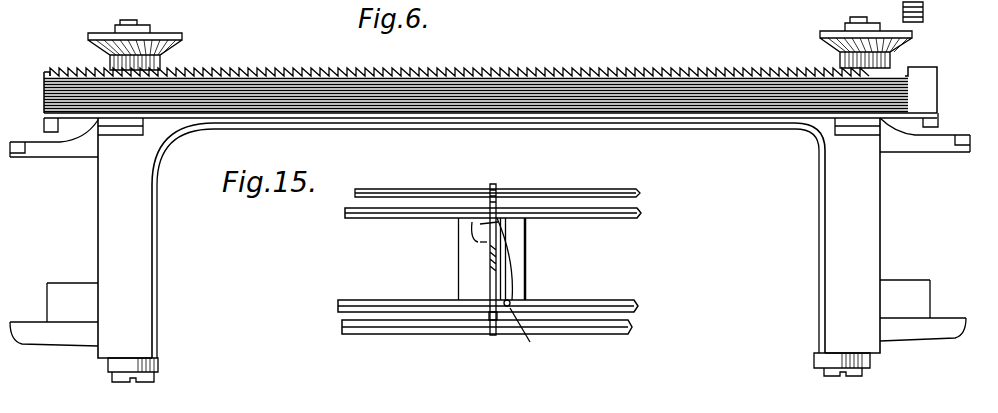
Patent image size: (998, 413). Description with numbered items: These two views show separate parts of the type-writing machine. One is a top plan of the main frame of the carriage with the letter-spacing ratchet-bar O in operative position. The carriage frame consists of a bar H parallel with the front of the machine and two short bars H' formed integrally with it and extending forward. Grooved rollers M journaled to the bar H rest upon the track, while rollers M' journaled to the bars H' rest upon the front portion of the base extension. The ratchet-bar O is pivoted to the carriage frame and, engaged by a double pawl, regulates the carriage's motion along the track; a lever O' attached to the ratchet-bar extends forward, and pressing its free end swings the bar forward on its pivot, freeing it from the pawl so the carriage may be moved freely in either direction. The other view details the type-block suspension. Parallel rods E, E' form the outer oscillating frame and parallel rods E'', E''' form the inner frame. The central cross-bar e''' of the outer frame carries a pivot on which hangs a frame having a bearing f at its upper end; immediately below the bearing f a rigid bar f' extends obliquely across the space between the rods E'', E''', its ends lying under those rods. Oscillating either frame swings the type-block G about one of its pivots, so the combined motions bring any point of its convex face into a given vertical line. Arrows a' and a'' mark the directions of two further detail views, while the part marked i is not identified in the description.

In FIG. 6, the letter-spacing ratchet-bar O is at (491, 88).
In FIG. 6, the lever O' is at (490, 138).
In FIG. 6, the bar H is at (488, 240).
In FIG. 6, the short bars H' is at (504, 238).
In FIG. 6, the grooved rollers M is at (505, 36).
In FIG. 6, the rollers M' is at (508, 362).
In FIG. 15, the rod E is at (497, 183).
In FIG. 15, the rod E' is at (487, 337).
In FIG. 15, the rod E'' is at (493, 223).
In FIG. 15, the rod E''' is at (488, 297).
In FIG. 15, the central cross-bar e''' is at (496, 254).
In FIG. 15, the type-block G is at (525, 243).
In FIG. 15, the link i is at (546, 278).
In FIG. 15, the rigid bar f' is at (458, 232).
In FIG. 15, the bearing f is at (456, 250).
In FIG. 15, the arrow a' is at (395, 257).
In FIG. 15, the arrow a'' is at (488, 338).